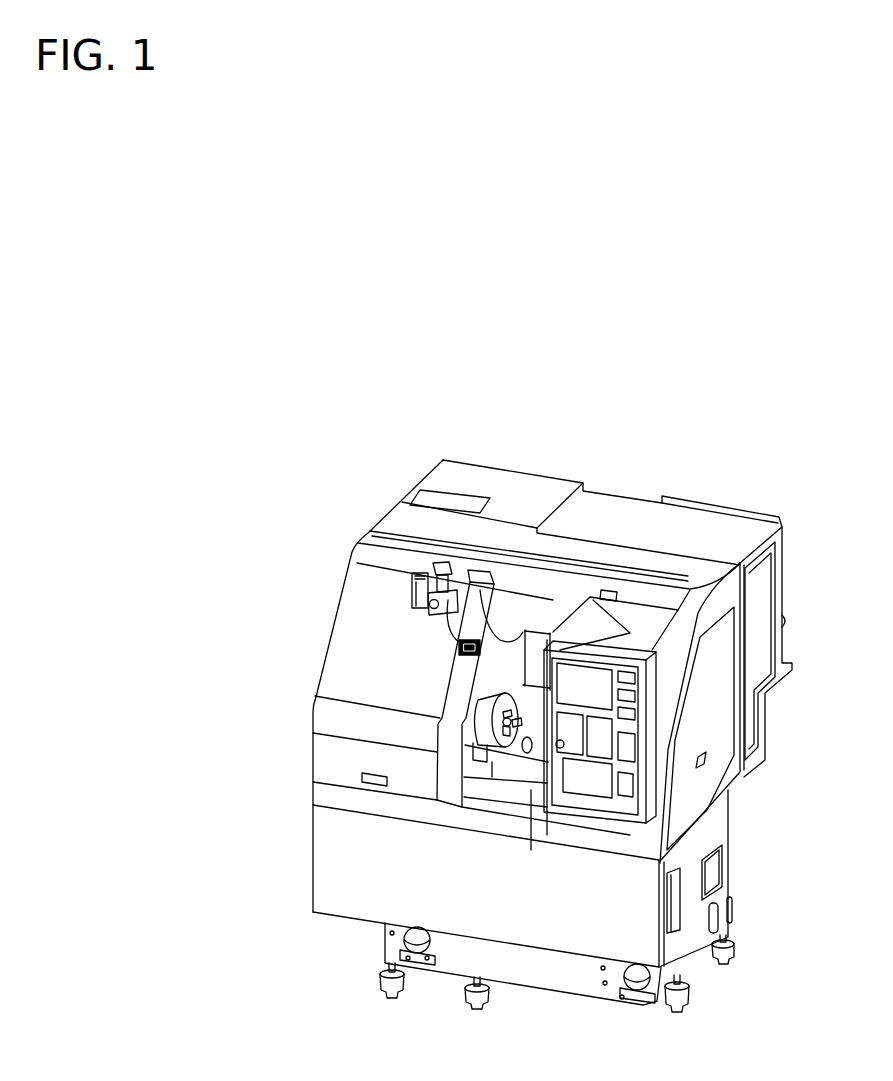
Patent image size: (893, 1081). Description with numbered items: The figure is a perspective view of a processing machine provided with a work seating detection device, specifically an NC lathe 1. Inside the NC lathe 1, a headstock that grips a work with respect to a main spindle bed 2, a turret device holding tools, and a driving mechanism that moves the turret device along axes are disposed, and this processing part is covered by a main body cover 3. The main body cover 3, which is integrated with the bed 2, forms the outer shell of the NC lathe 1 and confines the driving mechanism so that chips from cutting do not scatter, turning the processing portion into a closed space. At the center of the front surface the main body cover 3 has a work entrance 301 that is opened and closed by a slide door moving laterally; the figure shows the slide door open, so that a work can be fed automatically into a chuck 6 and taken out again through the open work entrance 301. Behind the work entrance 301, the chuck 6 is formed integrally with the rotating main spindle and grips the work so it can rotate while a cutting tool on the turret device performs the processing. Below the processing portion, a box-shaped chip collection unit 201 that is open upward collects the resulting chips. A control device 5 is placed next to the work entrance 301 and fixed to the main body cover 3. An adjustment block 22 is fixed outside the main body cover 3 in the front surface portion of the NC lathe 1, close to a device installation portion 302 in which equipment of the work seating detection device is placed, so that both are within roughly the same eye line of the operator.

The NC lathe 1 is at (564, 370).
The main spindle bed 2 is at (690, 945).
The chip collection unit 201 is at (506, 806).
The main body cover 3 is at (352, 643).
The work entrance 301 is at (485, 672).
The device installation portion 302 is at (420, 565).
The adjustment block 22 is at (473, 637).
The control device 5 is at (650, 788).
The chuck 6 is at (500, 757).